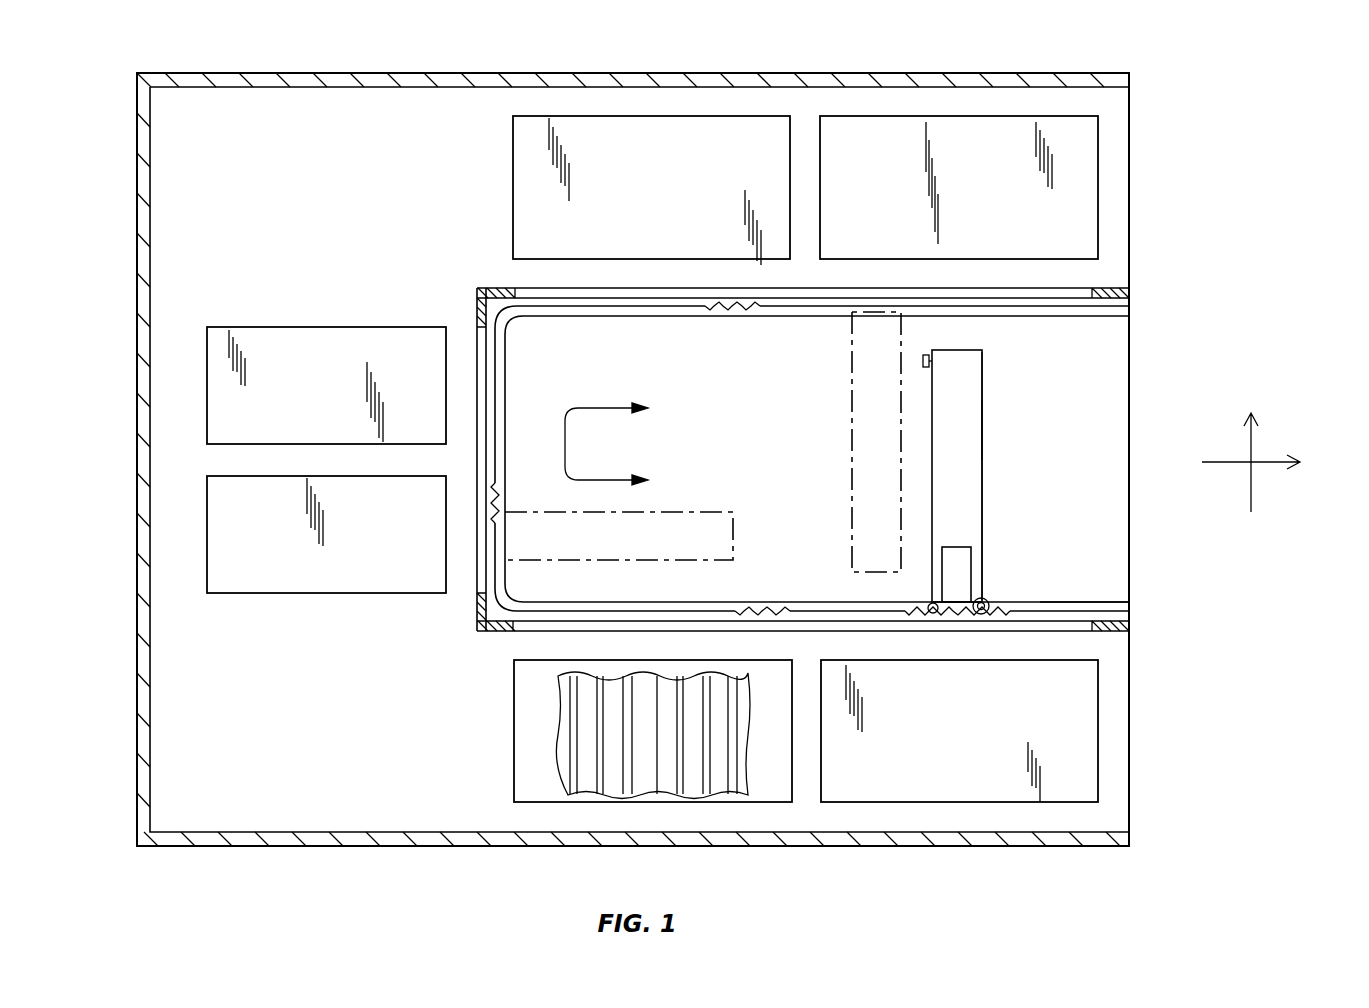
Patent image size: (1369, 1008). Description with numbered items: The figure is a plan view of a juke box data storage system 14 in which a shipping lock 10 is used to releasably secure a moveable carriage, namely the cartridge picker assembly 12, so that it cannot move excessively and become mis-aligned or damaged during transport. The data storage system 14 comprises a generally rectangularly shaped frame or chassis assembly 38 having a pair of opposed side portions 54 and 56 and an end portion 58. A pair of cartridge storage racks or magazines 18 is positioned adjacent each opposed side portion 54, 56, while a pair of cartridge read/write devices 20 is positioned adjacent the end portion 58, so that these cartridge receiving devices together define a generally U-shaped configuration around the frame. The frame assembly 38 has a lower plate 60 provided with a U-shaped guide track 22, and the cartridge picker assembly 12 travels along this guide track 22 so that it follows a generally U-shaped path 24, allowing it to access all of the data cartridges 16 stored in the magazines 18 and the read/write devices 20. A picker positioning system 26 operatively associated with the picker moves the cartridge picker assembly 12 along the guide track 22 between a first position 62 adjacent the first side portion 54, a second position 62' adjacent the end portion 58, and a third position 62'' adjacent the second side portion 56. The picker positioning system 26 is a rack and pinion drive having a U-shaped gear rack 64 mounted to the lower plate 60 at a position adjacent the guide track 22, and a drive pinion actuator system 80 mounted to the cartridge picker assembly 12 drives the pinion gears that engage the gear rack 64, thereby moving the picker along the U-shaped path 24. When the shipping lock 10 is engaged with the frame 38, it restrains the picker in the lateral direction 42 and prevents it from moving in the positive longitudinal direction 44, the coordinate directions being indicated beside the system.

The shipping lock 10 is at (936, 336).
The cartridge picker assembly 12 is at (1000, 476).
The data storage system 14 is at (244, 68).
The cartridges 16 is at (597, 725).
The cartridge storage racks or magazines 18 is at (840, 116).
The cartridge read/write devices 20 is at (237, 476).
The U-shaped guide track 22 is at (505, 365).
The U-shaped path 24 is at (565, 445).
The picker positioning system 26 is at (1103, 592).
The frame or chassis assembly 38 is at (1140, 359).
The lateral direction 42 is at (1275, 465).
The longitudinal direction 44 is at (1249, 445).
The first side portion 54 is at (1073, 630).
The second side portion 56 is at (1073, 288).
The end portion 58 is at (477, 612).
The lower plate 60 is at (700, 381).
The first position 62 is at (1018, 430).
The second position 62' is at (638, 515).
The third position 62'' is at (849, 442).
The U-shaped gear rack 64 is at (779, 603).
The drive pinion actuator system 80 is at (990, 588).